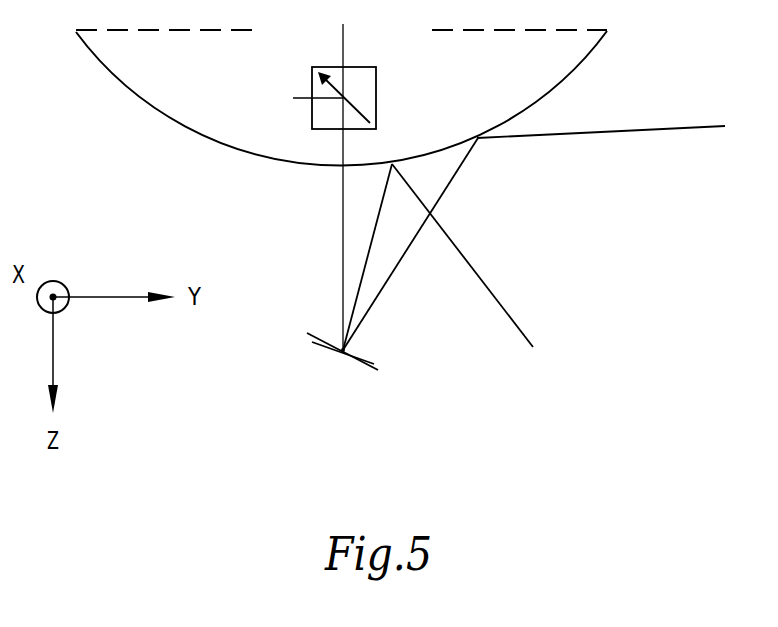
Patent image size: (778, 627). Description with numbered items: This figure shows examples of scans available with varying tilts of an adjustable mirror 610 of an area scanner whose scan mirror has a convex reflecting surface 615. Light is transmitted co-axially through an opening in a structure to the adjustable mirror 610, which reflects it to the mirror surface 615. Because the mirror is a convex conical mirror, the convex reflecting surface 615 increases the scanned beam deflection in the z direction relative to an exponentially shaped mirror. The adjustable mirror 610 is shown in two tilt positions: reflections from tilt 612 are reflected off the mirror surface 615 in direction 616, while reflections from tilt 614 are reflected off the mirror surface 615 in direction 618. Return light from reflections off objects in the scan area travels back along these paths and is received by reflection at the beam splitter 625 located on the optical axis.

The adjustable mirror 610 is at (338, 355).
The tilt 612 is at (371, 370).
The tilt 614 is at (362, 358).
The convex reflecting surface 615 is at (558, 88).
The direction 616 is at (701, 125).
The direction 618 is at (491, 291).
The beam splitter 625 is at (377, 77).